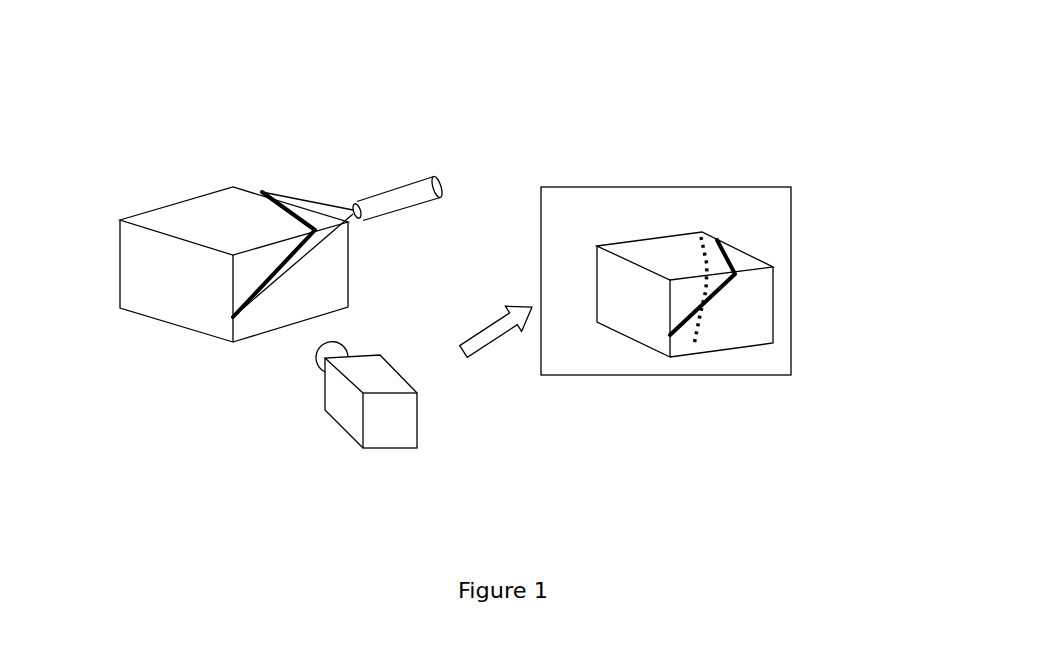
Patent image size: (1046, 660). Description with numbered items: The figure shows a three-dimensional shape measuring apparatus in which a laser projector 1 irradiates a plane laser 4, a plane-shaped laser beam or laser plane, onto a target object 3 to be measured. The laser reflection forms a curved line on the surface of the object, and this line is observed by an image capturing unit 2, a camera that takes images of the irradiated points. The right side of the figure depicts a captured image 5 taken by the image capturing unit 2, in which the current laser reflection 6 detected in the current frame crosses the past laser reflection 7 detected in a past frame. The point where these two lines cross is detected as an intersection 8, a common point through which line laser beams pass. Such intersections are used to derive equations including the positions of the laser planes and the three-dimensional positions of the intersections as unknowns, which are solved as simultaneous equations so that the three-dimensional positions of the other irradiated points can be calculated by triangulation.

The laser projector 1 is at (398, 183).
The image capturing unit 2 is at (313, 423).
The target object 3 is at (182, 200).
The plane laser 4 is at (317, 198).
The captured image 5 is at (572, 380).
The current laser reflection 6 is at (730, 257).
The past laser reflection 7 is at (700, 342).
The intersection 8 is at (712, 307).